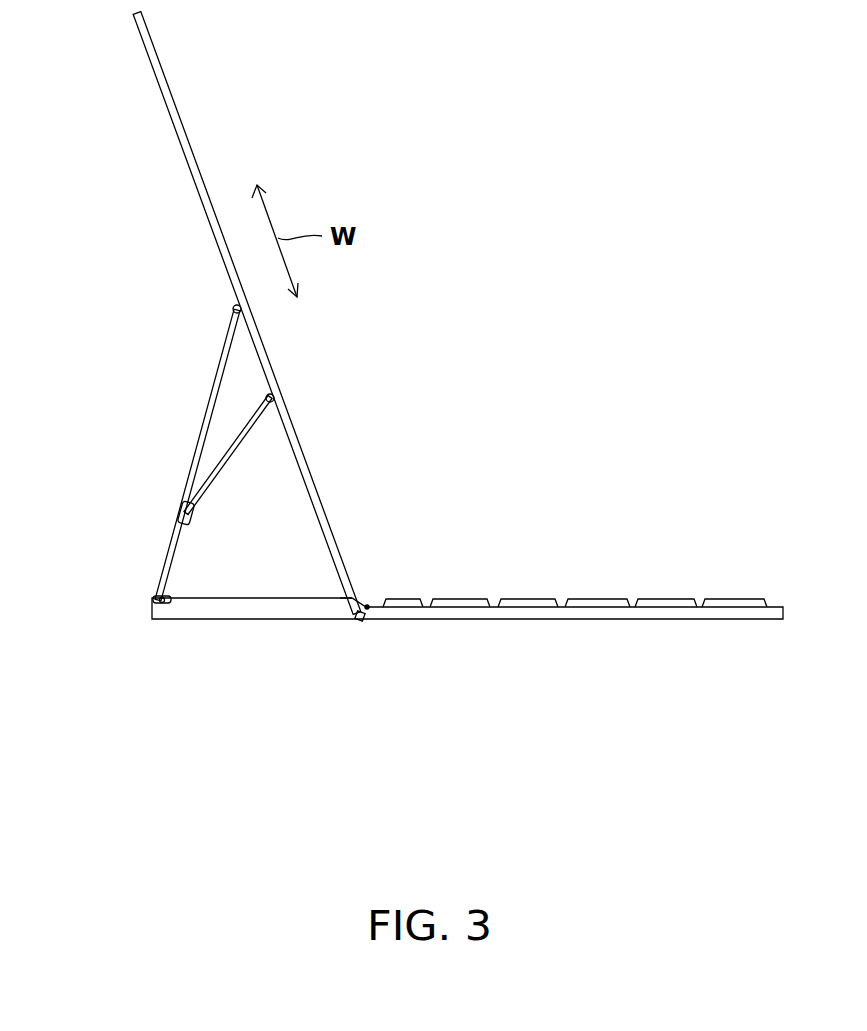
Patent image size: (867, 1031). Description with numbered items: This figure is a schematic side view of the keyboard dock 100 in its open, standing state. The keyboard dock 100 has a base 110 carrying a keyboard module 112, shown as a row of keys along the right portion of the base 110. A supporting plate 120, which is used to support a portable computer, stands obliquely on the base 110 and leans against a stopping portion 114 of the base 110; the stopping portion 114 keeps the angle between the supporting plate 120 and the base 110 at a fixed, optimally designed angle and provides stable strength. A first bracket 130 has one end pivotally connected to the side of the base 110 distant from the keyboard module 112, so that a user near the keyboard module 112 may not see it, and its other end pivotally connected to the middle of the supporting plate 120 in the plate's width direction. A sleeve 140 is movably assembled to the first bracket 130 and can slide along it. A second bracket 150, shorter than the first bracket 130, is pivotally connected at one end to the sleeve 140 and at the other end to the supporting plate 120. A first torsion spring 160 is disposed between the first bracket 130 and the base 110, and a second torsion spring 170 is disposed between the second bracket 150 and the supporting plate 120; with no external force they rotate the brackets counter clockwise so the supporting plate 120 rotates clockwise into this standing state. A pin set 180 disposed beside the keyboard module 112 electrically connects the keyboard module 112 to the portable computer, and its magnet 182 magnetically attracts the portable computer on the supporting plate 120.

The keyboard dock 100 is at (752, 735).
The base 110 is at (231, 610).
The keyboard module 112 is at (606, 598).
The stopping portion 114 is at (348, 602).
The supporting plate 120 is at (195, 177).
The first bracket 130 is at (207, 426).
The sleeve 140 is at (177, 512).
The second bracket 150 is at (222, 478).
The first torsion spring 160 is at (163, 605).
The second torsion spring 170 is at (276, 399).
The pin set 180 is at (368, 605).
The magnet 182 is at (366, 619).